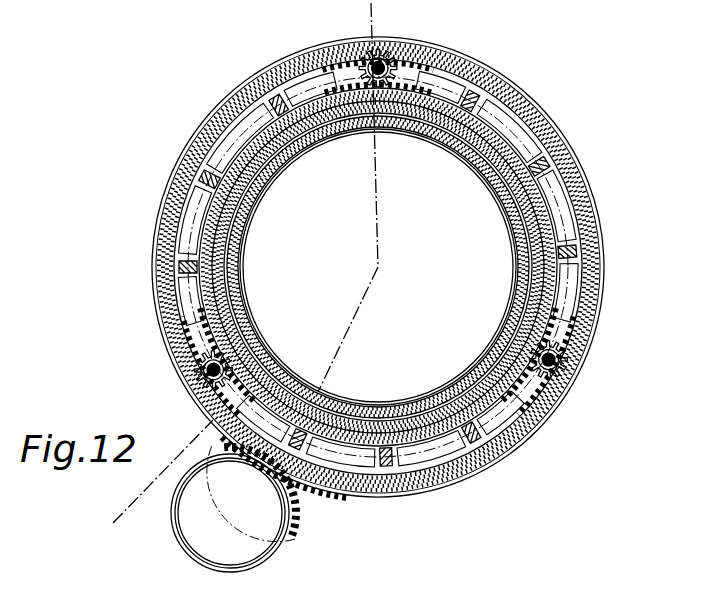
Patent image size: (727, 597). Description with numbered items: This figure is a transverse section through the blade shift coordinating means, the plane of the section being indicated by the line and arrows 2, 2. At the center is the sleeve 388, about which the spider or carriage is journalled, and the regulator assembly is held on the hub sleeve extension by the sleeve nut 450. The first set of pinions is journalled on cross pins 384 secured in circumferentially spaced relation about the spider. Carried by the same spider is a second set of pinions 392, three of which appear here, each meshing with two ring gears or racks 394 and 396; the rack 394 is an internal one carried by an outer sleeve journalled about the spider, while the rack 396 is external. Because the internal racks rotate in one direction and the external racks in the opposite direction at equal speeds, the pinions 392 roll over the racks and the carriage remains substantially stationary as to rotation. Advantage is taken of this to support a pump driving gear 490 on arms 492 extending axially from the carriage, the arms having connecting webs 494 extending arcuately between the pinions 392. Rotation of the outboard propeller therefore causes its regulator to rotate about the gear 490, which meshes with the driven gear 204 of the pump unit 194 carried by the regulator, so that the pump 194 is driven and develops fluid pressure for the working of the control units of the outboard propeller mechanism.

The line and arrows 2— 2 is at (265, 285).
The pump unit 194 is at (220, 525).
The driven gear 204 is at (260, 508).
The cross pins 384 is at (421, 265).
The sleeve 388 is at (378, 267).
The second set of pinions 392 is at (371, 225).
The ring gear or rack 394 is at (338, 230).
The ring gear or rack 396 is at (378, 267).
The sleeve nut 450 is at (378, 267).
The pump driving gear 490 is at (378, 267).
The arms 492 is at (370, 278).
The connecting webs 494 is at (382, 269).